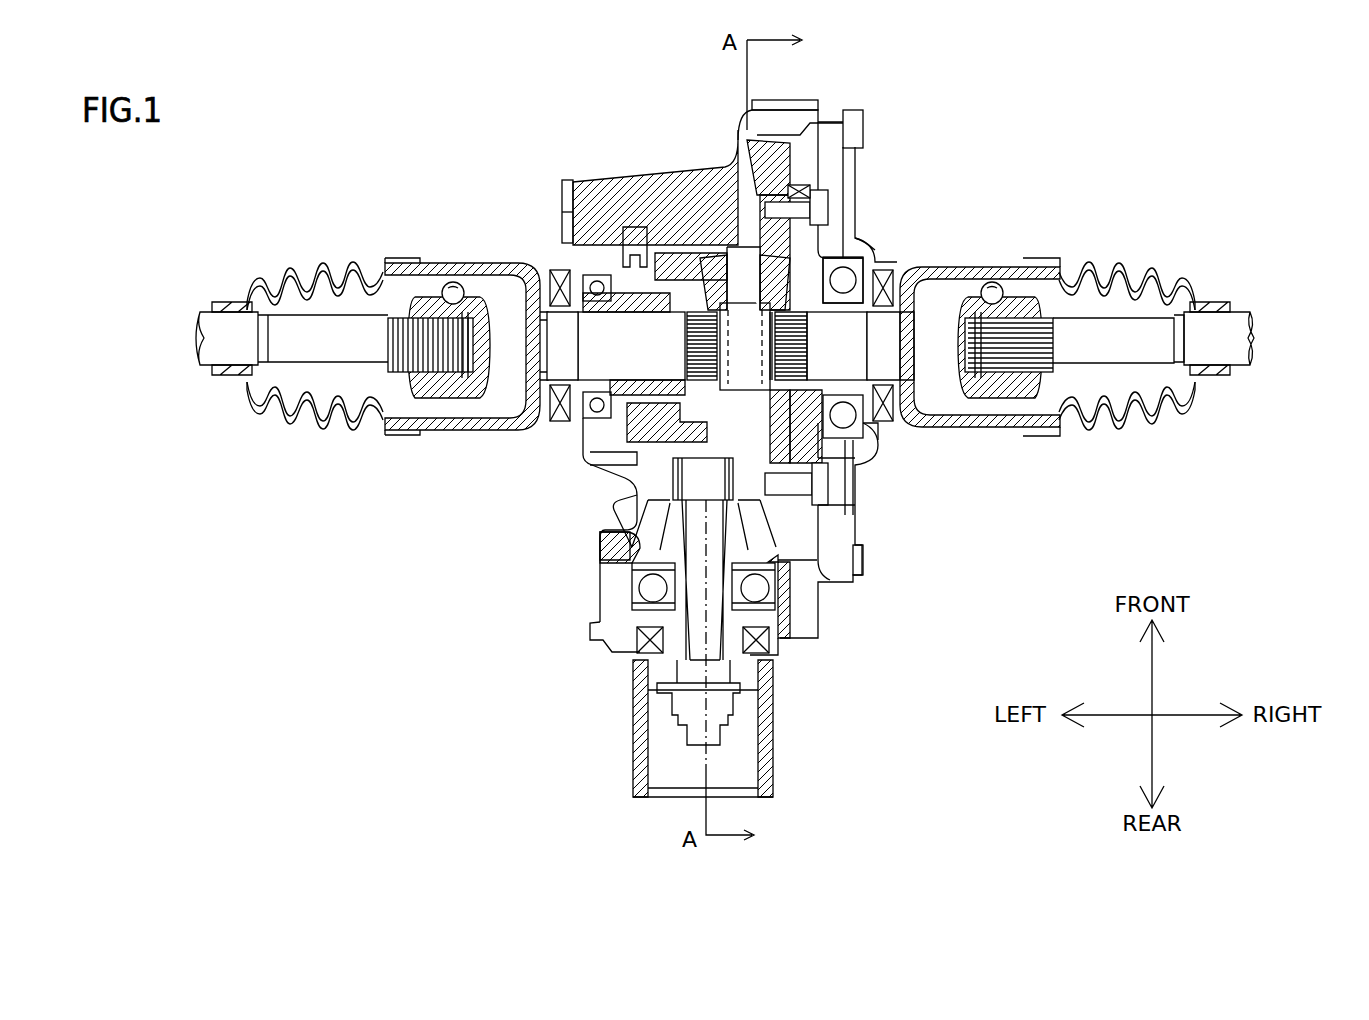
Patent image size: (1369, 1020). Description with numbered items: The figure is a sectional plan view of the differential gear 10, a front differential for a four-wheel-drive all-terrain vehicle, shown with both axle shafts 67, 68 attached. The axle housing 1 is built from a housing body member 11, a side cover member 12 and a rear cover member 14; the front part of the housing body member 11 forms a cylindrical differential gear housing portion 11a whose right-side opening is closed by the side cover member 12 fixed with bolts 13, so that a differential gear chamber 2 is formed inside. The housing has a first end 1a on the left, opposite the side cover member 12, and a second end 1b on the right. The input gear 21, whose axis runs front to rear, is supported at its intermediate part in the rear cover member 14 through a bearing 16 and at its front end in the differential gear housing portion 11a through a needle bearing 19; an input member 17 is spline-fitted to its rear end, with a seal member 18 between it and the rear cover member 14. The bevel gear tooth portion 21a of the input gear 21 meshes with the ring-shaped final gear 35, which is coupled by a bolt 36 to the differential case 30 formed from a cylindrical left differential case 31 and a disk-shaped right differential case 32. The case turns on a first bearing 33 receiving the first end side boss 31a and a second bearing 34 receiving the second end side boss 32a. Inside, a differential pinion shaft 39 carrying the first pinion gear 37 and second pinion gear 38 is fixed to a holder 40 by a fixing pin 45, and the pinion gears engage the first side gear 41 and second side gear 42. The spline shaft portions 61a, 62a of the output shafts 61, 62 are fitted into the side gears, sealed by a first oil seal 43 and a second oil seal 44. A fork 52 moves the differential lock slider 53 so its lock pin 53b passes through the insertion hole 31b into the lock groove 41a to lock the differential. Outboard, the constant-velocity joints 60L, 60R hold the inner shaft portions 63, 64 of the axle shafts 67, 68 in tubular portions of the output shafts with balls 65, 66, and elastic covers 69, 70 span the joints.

The axle housing 1 is at (857, 77).
The first end 1a is at (560, 155).
The second end 1b is at (892, 128).
The differential gear chamber 2 is at (740, 205).
The differential gear 10 is at (962, 58).
The housing body member 11 is at (735, 138).
The differential gear housing portion 11a is at (600, 458).
The side cover member 12 is at (850, 180).
The bolts 13 is at (855, 120).
The rear cover member 14 is at (805, 640).
The bearing 16 is at (638, 580).
The input member 17 is at (772, 730).
The seal member 18 is at (640, 650).
The needle bearing 19 is at (718, 508).
The input gear 21 is at (650, 530).
The bevel gear tooth portion 21a is at (628, 512).
The differential case 30 is at (908, 185).
The left differential case 31 is at (828, 210).
The first end side boss 31a is at (588, 250).
The insertion hole 31b is at (663, 256).
The right differential case 32 is at (830, 240).
The second end side boss 32a is at (893, 425).
The first bearing 33 is at (570, 418).
The second bearing 34 is at (858, 440).
The final gear 35 is at (848, 532).
The bolt 36 is at (822, 500).
The first pinion gear 37 is at (707, 310).
The second pinion gear 38 is at (830, 460).
The differential pinion shaft 39 is at (818, 483).
The holder 40 is at (800, 368).
The first side gear 41 is at (688, 310).
The lock groove 41a is at (698, 500).
The second side gear 42 is at (868, 252).
The first oil seal 43 is at (552, 275).
The second oil seal 44 is at (897, 272).
The fixing pin 45 is at (802, 350).
The fork 52 is at (600, 215).
The differential lock slider 53 is at (612, 300).
The lock pin 53b is at (690, 302).
The constant-velocity joint 60L is at (432, 190).
The constant-velocity joint 60R is at (1015, 193).
The output shaft 61 is at (485, 258).
The spline shaft portion 61a is at (515, 428).
The output shaft 62 is at (960, 262).
The spline shaft portion 62a is at (950, 420).
The inner shaft portion 63 is at (425, 433).
The inner shaft portion 64 is at (1020, 436).
The balls 65 is at (442, 282).
The balls 66 is at (1002, 280).
The axle shaft 67 is at (356, 262).
The axle shaft 68 is at (1092, 262).
The cover 69 is at (272, 285).
The cover 70 is at (1160, 278).